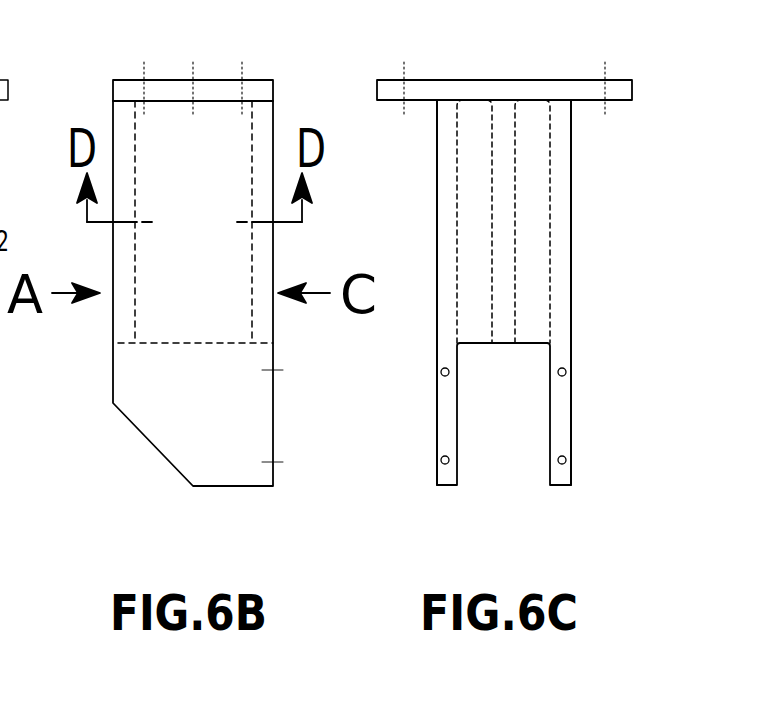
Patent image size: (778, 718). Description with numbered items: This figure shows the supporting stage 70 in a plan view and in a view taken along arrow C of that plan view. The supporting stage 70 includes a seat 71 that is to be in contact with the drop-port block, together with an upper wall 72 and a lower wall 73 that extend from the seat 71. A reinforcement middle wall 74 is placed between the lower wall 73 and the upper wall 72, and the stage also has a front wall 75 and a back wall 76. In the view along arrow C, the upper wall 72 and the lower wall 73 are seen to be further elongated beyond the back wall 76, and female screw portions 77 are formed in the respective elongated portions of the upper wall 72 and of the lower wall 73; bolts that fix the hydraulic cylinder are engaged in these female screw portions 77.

In FIG. 6B, the supporting stage 70 is at (137, 473).
In FIG. 6C, the supporting stage 70 is at (432, 502).
In FIG. 6B, the seat 71 is at (217, 93).
In FIG. 6C, the seat 71 is at (503, 90).
In FIG. 6C, the upper wall 72 is at (448, 238).
In FIG. 6C, the lower wall 73 is at (560, 238).
In FIG. 6C, the reinforcement middle wall 74 is at (507, 185).
In FIG. 6B, the front wall 75 is at (125, 314).
In FIG. 6B, the back wall 76 is at (262, 321).
In FIG. 6C, the back wall 76 is at (477, 328).
In FIG. 6C, the female screw portions 77 is at (442, 453).